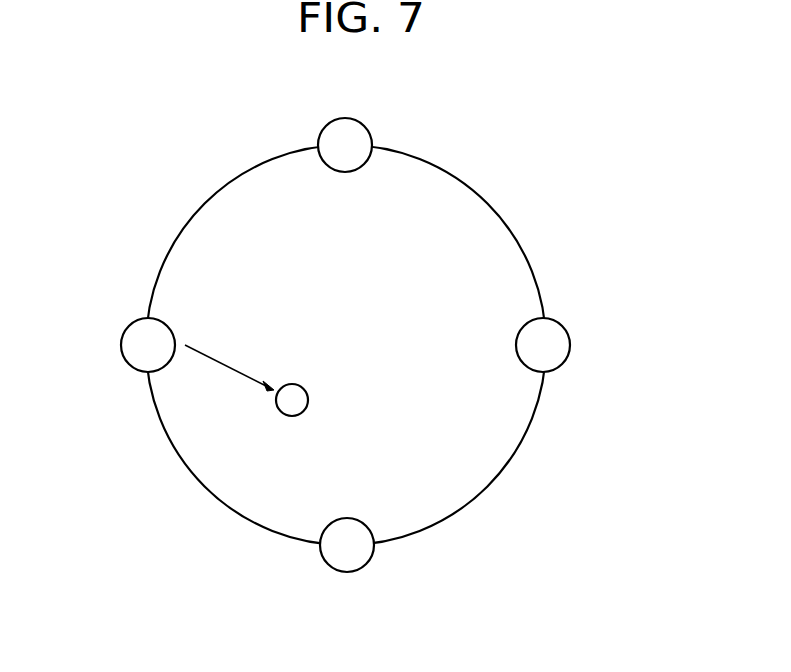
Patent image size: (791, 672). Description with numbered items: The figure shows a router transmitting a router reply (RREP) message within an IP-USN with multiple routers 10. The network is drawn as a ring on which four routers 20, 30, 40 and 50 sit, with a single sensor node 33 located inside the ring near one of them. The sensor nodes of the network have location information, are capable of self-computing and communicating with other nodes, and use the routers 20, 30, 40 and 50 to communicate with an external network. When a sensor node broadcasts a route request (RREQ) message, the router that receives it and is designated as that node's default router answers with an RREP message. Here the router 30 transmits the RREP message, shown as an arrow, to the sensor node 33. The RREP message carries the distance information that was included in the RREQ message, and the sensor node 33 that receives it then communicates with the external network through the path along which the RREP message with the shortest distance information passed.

The IP-USN with multiple routers 10 is at (505, 222).
The router 20 is at (345, 118).
The router 30 is at (121, 345).
The router 40 is at (345, 572).
The router 50 is at (571, 345).
The sensor node 33 is at (281, 412).